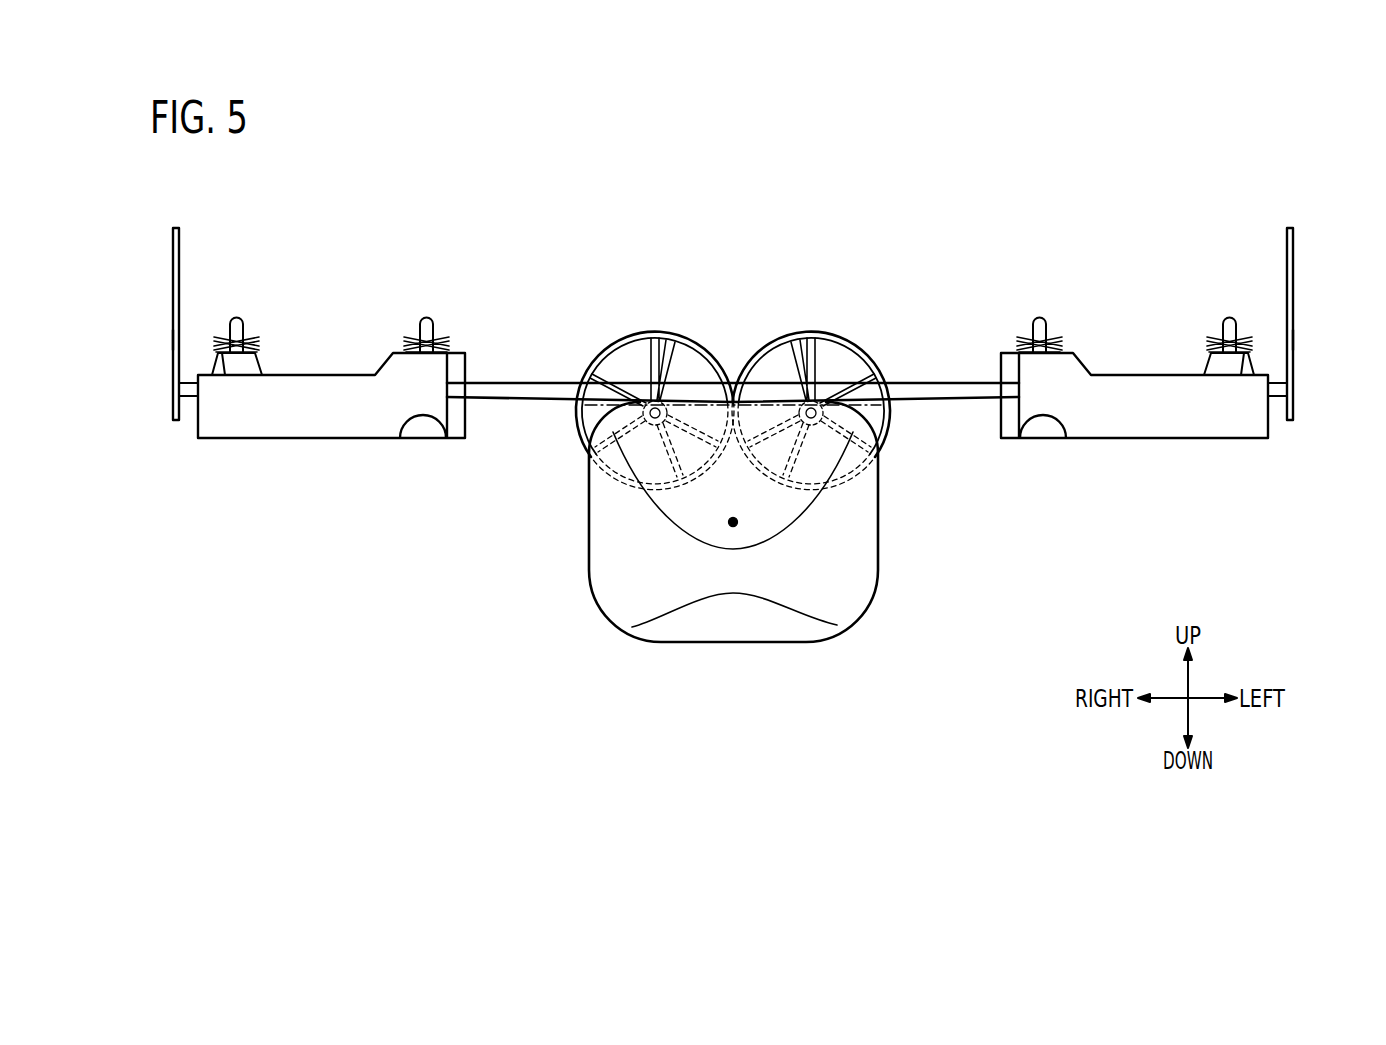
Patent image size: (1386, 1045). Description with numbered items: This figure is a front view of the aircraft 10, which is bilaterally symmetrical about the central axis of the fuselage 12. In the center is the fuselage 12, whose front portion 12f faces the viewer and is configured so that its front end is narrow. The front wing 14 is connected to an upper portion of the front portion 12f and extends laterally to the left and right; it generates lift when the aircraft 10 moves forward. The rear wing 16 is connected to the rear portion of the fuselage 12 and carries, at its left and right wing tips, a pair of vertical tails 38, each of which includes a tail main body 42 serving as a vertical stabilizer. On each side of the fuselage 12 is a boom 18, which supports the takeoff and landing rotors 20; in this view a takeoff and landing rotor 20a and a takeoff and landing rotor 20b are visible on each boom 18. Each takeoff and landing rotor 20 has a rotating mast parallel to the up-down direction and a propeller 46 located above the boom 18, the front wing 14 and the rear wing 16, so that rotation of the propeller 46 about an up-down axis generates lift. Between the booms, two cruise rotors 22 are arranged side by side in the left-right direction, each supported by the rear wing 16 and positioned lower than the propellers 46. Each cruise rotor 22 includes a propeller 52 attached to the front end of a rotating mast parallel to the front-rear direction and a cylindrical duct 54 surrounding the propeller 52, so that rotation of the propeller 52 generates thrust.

The aircraft 10 is at (603, 208).
The fuselage 12 is at (757, 562).
The front portion 12f is at (820, 594).
The front wing 14 is at (523, 412).
The rear wing 16 is at (196, 410).
The boom 18 is at (364, 440).
The takeoff and landing rotor 20 is at (733, 305).
The takeoff and landing rotor 20a is at (1034, 305).
The takeoff and landing rotor 20b is at (1218, 305).
The cruise rotor 22 is at (733, 376).
The vertical tail 38 is at (162, 281).
The tail main body 42 is at (173, 340).
The propeller 46 is at (257, 339).
The propeller 52 is at (612, 375).
The cylindrical duct 54 is at (641, 333).